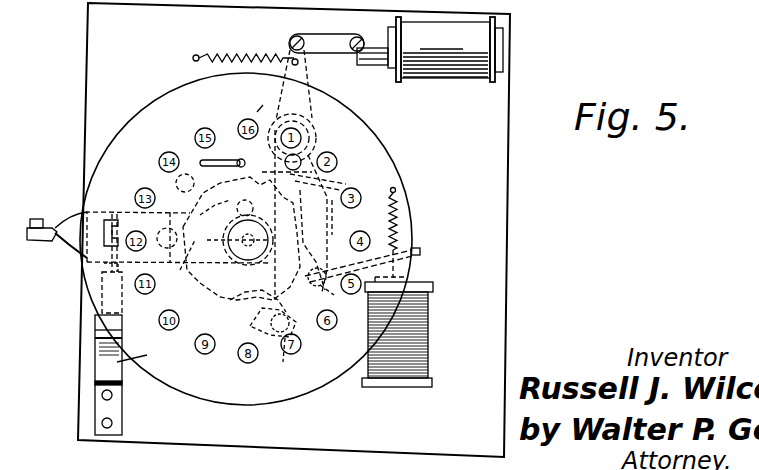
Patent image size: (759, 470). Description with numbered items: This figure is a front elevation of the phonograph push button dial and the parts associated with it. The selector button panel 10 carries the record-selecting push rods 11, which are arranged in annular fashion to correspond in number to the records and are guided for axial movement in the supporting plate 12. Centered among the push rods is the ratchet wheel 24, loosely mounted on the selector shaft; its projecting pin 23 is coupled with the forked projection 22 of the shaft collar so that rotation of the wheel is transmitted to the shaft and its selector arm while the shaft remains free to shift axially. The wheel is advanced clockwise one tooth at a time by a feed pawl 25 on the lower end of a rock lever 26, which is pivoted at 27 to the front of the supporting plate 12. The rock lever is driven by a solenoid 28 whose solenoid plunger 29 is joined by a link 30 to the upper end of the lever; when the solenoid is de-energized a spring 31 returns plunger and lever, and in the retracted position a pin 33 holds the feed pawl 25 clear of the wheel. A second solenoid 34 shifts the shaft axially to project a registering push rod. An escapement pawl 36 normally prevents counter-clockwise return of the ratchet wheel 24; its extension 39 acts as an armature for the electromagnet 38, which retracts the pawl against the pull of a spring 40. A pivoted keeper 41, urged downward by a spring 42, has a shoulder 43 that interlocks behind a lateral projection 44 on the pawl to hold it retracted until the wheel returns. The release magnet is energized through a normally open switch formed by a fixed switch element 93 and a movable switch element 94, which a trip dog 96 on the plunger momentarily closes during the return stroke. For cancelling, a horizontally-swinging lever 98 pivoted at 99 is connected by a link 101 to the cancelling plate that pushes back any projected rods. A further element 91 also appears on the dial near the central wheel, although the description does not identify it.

The selector button panel 10 is at (380, 143).
The record-selecting push rods 11 is at (254, 99).
The supporting plate 12 is at (368, 293).
The forked projection 22 is at (241, 238).
The projecting pin 23 is at (244, 199).
The ratchet wheel 24 is at (258, 292).
The feed pawl 25 is at (270, 361).
The rock lever 26 is at (302, 78).
The pivot 27 is at (318, 152).
The solenoid 28 is at (445, 49).
The solenoid plunger 29 is at (372, 70).
The link 30 is at (324, 42).
The spring 31 is at (236, 55).
The pin 33 is at (254, 322).
The solenoid 34 is at (313, 292).
The escapement pawl 36 is at (332, 298).
The electromagnet 38 is at (428, 328).
The extension 39 is at (420, 252).
The spring 40 is at (400, 208).
The pivoted keeper 41 is at (176, 182).
The spring 42 is at (204, 160).
The shoulder 43 is at (348, 186).
The lateral projection 44 is at (346, 217).
The disk 91 is at (235, 240).
The fixed switch element 93 is at (145, 359).
The movable switch element 94 is at (98, 320).
The trip dog 96 is at (100, 272).
The horizontally-swinging lever 98 is at (78, 240).
The pivot 99 is at (182, 271).
The link 101 is at (50, 212).